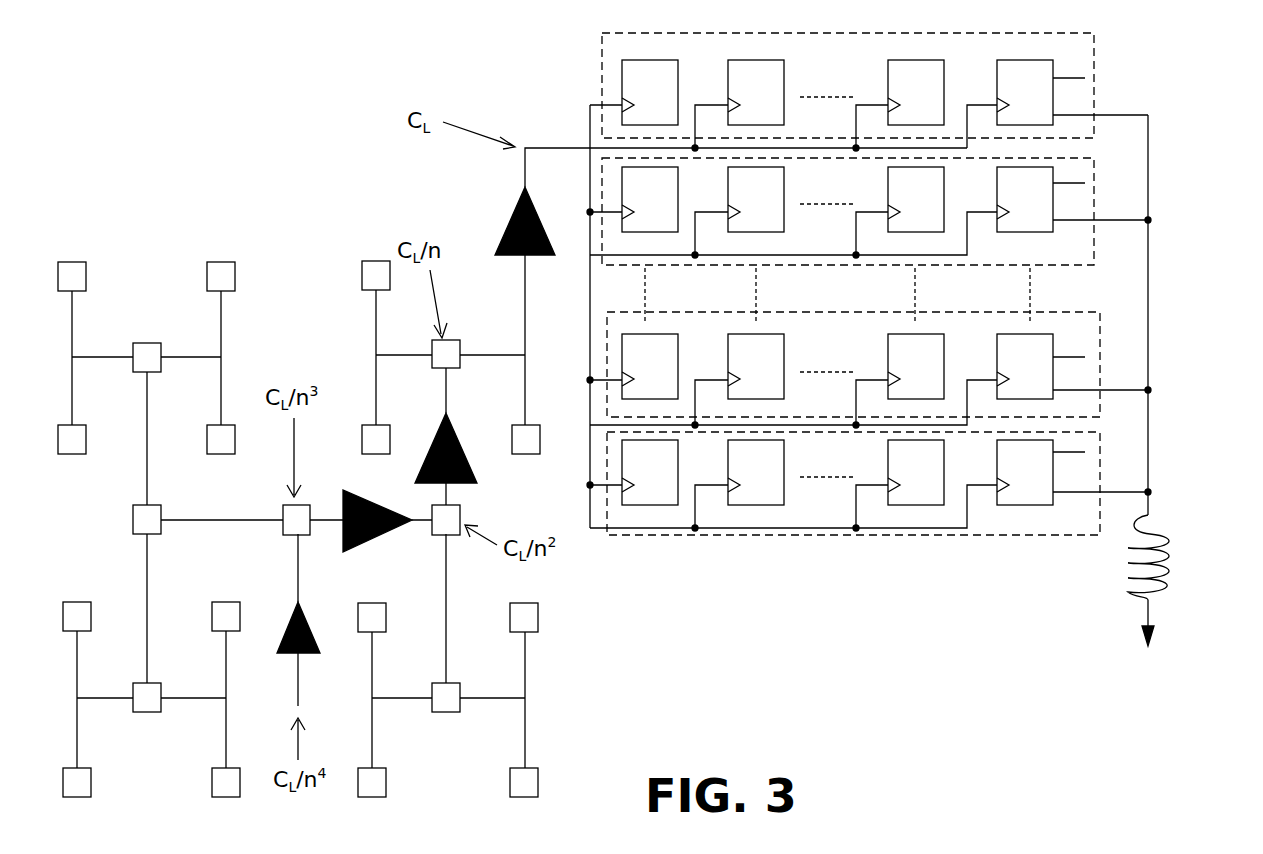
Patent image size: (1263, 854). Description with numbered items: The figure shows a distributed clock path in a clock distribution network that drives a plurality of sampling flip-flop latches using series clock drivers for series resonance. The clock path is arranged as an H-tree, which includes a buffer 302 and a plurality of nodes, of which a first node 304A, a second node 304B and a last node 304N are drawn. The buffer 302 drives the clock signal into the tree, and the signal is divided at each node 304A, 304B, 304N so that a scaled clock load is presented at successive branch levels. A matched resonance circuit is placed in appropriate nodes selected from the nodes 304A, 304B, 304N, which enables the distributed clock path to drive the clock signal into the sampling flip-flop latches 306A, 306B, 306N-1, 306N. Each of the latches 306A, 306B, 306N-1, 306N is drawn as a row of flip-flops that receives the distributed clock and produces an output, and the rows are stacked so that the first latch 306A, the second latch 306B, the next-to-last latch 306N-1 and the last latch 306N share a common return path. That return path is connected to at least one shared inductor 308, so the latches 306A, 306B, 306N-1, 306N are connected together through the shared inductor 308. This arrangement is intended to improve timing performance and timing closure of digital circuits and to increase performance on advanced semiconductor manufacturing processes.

The buffer 302 is at (287, 653).
The node 304A is at (283, 515).
The node 304B is at (438, 537).
The node 304N is at (477, 318).
The sampling flip-flop latch 306A is at (1094, 77).
The sampling flip-flop latch 306B is at (1094, 245).
The sampling flip-flop latch 306N-1 is at (1100, 338).
The sampling flip-flop latch 306N is at (1100, 454).
The shared inductor 308 is at (1128, 580).